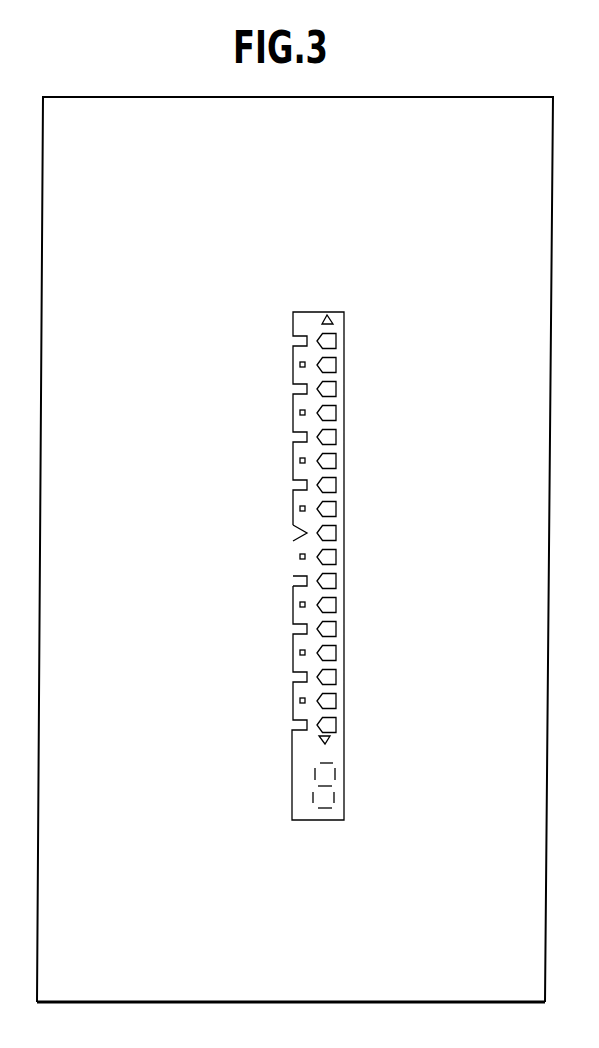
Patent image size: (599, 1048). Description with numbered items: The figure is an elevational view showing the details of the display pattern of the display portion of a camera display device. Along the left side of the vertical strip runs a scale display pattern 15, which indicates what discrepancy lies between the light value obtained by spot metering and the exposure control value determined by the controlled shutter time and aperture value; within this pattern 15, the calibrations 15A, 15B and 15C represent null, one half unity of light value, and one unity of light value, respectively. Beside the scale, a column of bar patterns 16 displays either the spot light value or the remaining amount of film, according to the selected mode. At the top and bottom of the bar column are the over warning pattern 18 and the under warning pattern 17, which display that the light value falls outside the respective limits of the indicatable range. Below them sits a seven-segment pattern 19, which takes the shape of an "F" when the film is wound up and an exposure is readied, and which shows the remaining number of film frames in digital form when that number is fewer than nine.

The scale display pattern 15 is at (233, 512).
The calibration 15A is at (305, 533).
The calibration 15B is at (299, 557).
The calibration 15C is at (294, 581).
The bar patterns 16 is at (334, 365).
The under warning pattern 17 is at (329, 740).
The over warning pattern 18 is at (327, 314).
The 7-segment pattern 19 is at (334, 797).